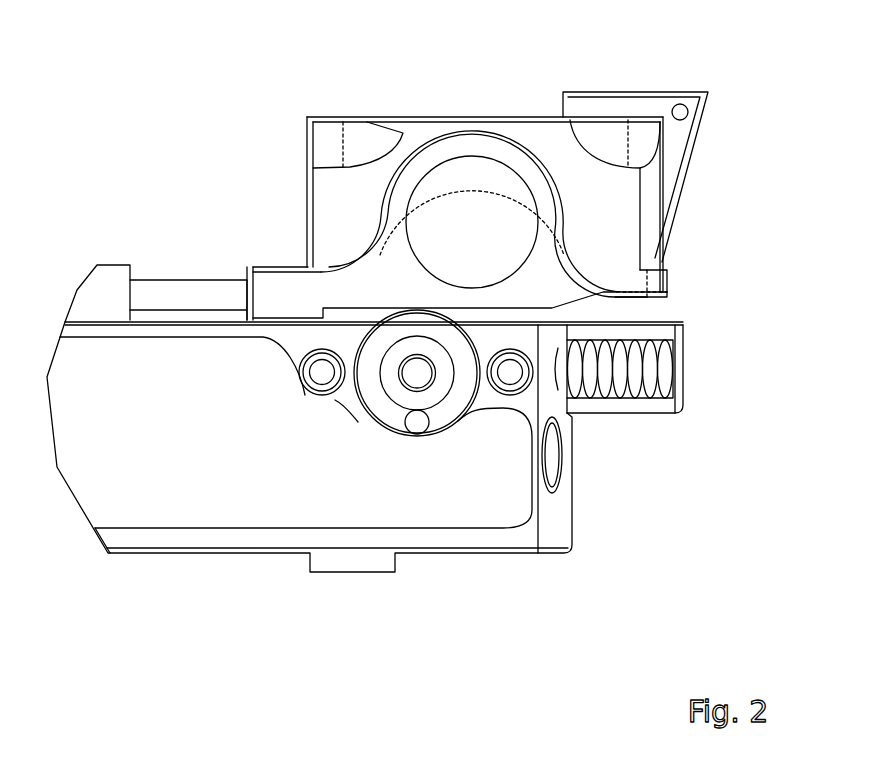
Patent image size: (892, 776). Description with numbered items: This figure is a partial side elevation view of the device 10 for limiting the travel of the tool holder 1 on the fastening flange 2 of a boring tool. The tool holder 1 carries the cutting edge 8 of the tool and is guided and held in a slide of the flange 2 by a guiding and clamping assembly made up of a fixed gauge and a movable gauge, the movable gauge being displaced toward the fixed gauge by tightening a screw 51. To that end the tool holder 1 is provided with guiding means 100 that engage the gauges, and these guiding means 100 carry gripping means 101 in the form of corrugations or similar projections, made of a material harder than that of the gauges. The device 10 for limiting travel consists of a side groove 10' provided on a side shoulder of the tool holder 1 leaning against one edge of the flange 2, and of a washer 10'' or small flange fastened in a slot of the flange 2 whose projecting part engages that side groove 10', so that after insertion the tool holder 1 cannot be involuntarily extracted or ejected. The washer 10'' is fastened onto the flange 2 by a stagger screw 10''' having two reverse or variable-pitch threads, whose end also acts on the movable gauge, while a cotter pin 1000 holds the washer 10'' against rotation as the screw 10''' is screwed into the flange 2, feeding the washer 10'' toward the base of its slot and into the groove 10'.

The tool holder 1 is at (442, 132).
The cutting edge 8 is at (690, 92).
The side groove 10' is at (498, 274).
The fastening flange 2 is at (556, 530).
The device for limiting the travel 10 is at (296, 495).
The screw 51 is at (320, 374).
The washer 10'' is at (420, 461).
The screw 10''' is at (300, 489).
The cotter pin 1000 is at (417, 424).
The guiding means 100 is at (692, 377).
The gripping means 101 is at (650, 380).